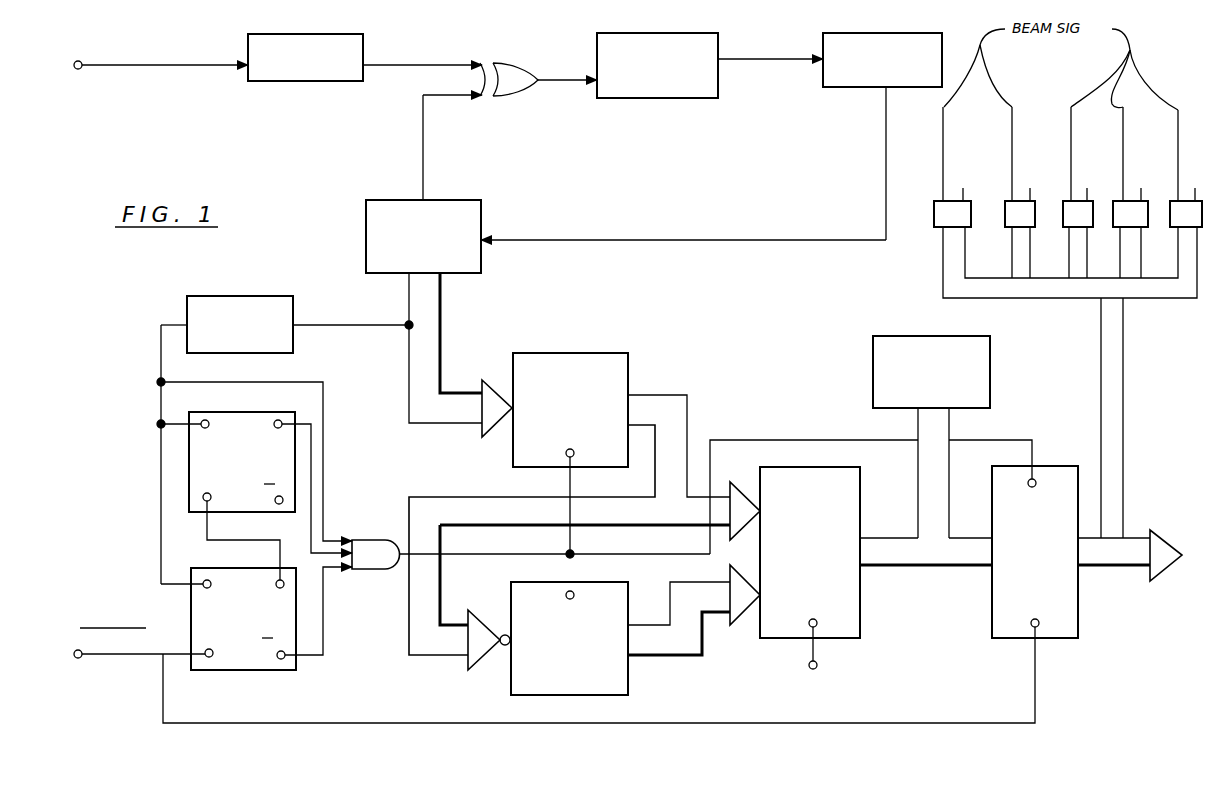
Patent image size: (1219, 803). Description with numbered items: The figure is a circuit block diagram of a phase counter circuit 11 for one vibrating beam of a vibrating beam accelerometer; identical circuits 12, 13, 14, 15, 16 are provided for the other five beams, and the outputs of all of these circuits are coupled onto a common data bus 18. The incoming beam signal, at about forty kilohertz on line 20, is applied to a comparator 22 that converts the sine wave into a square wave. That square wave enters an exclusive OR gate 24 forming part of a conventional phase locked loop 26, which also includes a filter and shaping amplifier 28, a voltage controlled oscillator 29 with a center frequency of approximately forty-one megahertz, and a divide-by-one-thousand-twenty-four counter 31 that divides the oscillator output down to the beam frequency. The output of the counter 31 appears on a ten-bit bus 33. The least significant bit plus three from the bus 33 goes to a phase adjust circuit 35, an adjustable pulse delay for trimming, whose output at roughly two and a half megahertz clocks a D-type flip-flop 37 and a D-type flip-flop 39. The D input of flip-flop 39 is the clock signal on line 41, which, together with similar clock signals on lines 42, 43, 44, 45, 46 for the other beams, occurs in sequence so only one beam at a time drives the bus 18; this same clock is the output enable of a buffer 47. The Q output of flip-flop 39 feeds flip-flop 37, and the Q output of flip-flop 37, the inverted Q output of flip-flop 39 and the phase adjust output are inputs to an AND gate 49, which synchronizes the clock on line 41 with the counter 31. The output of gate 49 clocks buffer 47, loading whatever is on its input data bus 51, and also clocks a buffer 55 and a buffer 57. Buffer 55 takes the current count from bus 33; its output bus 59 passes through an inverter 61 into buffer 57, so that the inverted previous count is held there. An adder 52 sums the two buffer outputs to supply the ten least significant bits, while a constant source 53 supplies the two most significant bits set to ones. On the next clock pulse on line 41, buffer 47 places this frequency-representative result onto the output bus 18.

The phase counter circuit 11 is at (132, 378).
The identical phase counter circuit 12 is at (940, 229).
The identical phase counter circuit 13 is at (1005, 229).
The identical phase counter circuit 14 is at (1063, 229).
The identical phase counter circuit 15 is at (1146, 229).
The identical phase counter circuit 16 is at (1202, 229).
The data bus 18 is at (1160, 530).
The line 20 is at (112, 68).
The comparator 22 is at (355, 58).
The exclusive OR gate 24 is at (505, 70).
The phase locked loop 26 is at (672, 189).
The filter and shaping amplifier 28 is at (718, 88).
The voltage controlled oscillator 29 is at (830, 86).
The divide by 1024 counter 31 is at (462, 205).
The 10-bit bus 33 is at (440, 338).
The phase adjust circuit 35 is at (228, 302).
The D-type flip-flop 37 is at (296, 455).
The D-type flip-flop 39 is at (296, 627).
The line 41 is at (140, 660).
The line 42 is at (965, 195).
The line 43 is at (1032, 195).
The line 44 is at (1089, 195).
The line 45 is at (1143, 195).
The line 46 is at (1197, 195).
The buffer 47 is at (1010, 642).
The AND gate 49 is at (370, 540).
The input data bus 51 is at (943, 568).
The adder 52 is at (788, 468).
The constant source 53 is at (880, 338).
The buffer 55 is at (628, 368).
The buffer 57 is at (628, 683).
The bus 59 is at (687, 392).
The inverter 61 is at (485, 668).